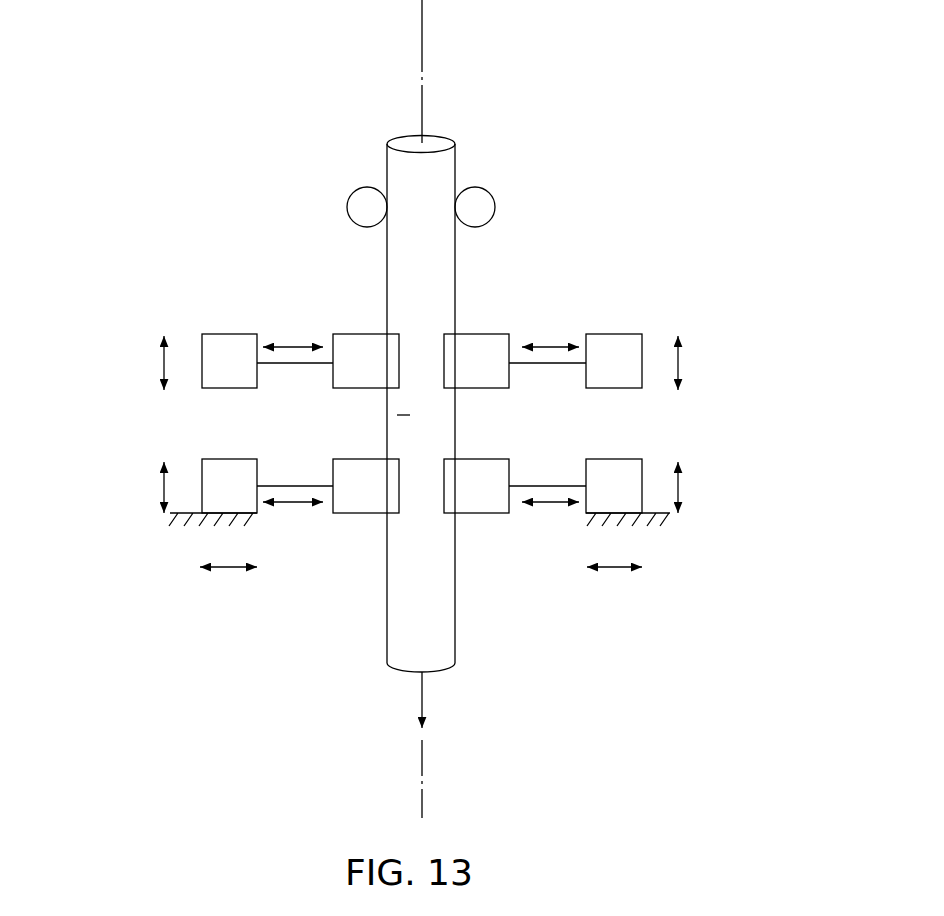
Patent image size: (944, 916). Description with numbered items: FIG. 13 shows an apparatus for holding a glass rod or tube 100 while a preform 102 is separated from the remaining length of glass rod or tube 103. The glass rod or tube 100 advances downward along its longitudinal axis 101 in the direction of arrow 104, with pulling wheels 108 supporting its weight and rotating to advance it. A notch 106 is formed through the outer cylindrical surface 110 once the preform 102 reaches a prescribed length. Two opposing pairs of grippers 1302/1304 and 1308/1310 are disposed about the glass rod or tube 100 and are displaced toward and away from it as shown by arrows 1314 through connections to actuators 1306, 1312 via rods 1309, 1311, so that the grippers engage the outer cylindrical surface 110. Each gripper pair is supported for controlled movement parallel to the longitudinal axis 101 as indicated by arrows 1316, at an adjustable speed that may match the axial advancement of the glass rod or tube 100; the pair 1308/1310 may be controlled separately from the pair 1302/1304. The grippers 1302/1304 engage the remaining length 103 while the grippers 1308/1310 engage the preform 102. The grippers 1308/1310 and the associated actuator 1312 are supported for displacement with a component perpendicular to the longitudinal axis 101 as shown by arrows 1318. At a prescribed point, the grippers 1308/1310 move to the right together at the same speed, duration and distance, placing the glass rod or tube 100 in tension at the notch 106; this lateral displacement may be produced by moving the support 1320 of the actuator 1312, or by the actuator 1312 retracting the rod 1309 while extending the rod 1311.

The glass rod or tube 100 is at (467, 156).
The longitudinal axis 101 is at (422, 68).
The preform 102 is at (387, 634).
The remaining length of glass rod or tube 103 is at (387, 162).
The arrow 104 is at (422, 690).
The notch 106 is at (397, 420).
The pulling wheels 108 is at (352, 196).
The outer cylindrical surface 110 is at (455, 634).
The gripper 1302 is at (483, 334).
The gripper 1304 is at (360, 334).
The actuator 1306 is at (230, 334).
The gripper 1308 is at (483, 513).
The rod 1309 is at (547, 486).
The gripper 1310 is at (360, 513).
The rod 1311 is at (293, 486).
The actuator 1312 is at (225, 459).
The arrows 1314 is at (293, 346).
The arrows 1316 is at (160, 358).
The arrows 1318 is at (230, 568).
The support 1320 is at (170, 515).